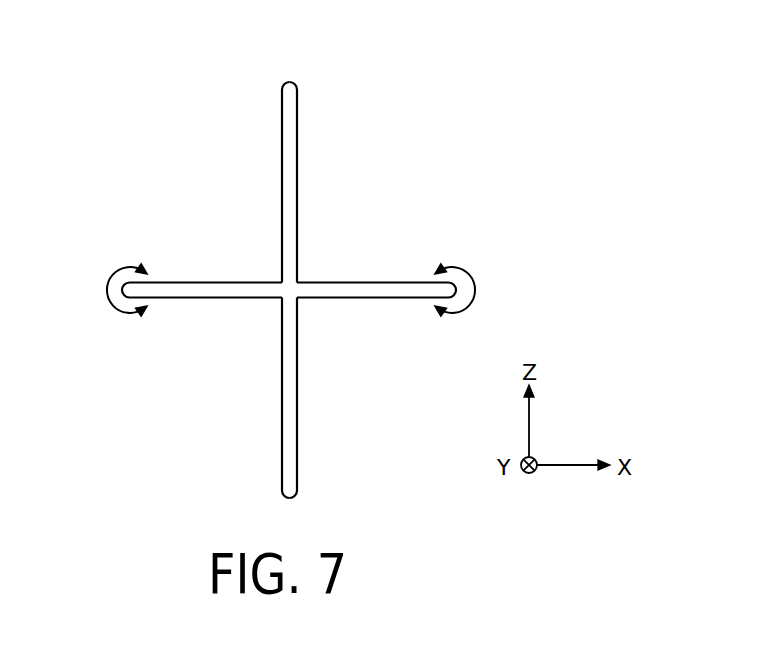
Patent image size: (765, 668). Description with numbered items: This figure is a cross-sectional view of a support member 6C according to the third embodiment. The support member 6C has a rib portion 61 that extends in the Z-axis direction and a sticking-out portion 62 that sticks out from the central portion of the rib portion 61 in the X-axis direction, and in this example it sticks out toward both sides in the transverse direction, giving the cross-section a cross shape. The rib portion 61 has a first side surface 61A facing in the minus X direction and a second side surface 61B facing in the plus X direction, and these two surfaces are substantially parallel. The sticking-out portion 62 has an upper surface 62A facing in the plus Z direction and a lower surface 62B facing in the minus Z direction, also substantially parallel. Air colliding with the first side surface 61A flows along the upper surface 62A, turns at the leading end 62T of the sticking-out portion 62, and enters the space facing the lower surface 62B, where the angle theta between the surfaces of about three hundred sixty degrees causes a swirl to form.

The support member 6C is at (505, 46).
The rib portion 61 is at (289, 290).
The first side surface 61A is at (281, 126).
The second side surface 61B is at (298, 126).
The sticking-out portion 62 is at (289, 278).
The upper surface 62A is at (248, 282).
The lower surface 62B is at (232, 298).
The leading end 62T is at (106, 290).